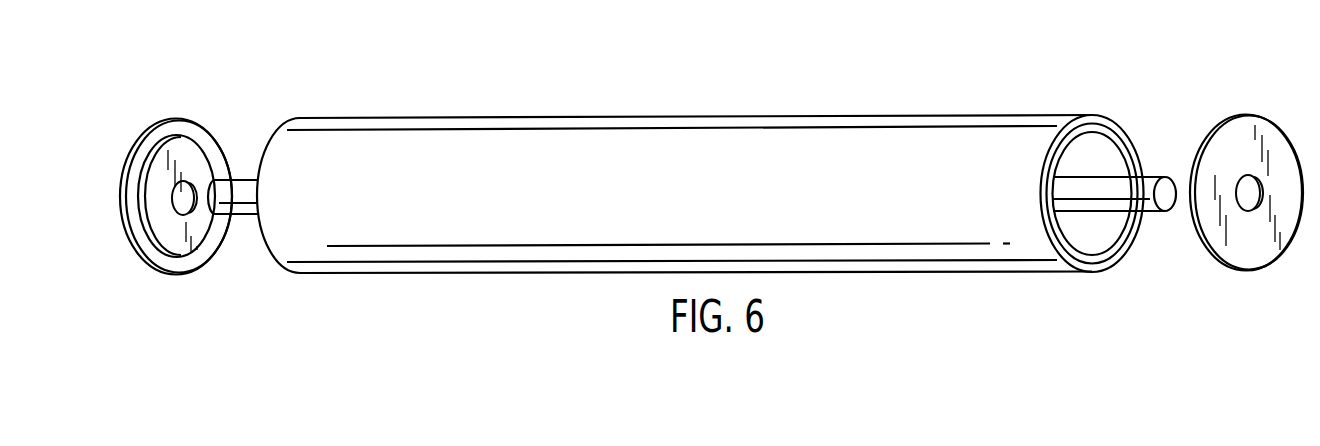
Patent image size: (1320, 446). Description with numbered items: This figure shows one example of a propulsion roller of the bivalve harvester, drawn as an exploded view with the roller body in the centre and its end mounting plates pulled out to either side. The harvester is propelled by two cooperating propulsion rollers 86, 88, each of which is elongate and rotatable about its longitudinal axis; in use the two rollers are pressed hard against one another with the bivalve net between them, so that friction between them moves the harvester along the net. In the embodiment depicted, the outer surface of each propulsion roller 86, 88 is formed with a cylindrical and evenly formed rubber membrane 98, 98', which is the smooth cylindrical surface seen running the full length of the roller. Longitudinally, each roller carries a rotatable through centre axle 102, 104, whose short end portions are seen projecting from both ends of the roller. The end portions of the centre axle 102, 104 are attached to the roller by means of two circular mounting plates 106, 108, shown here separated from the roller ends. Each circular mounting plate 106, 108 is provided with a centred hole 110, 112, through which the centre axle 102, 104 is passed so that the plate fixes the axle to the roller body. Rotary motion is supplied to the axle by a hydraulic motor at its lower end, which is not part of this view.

The propulsion roller 86 is at (674, 152).
The propulsion roller 88 is at (546, 96).
The rubber membrane 98 is at (1092, 155).
The rubber membrane 98' is at (1092, 155).
The centre axle 102 is at (709, 239).
The centre axle 104 is at (1140, 193).
The circular mounting plate 106 is at (192, 152).
The circular mounting plate 108 is at (1235, 138).
The centred hole 110 is at (180, 200).
The centred hole 112 is at (1245, 193).